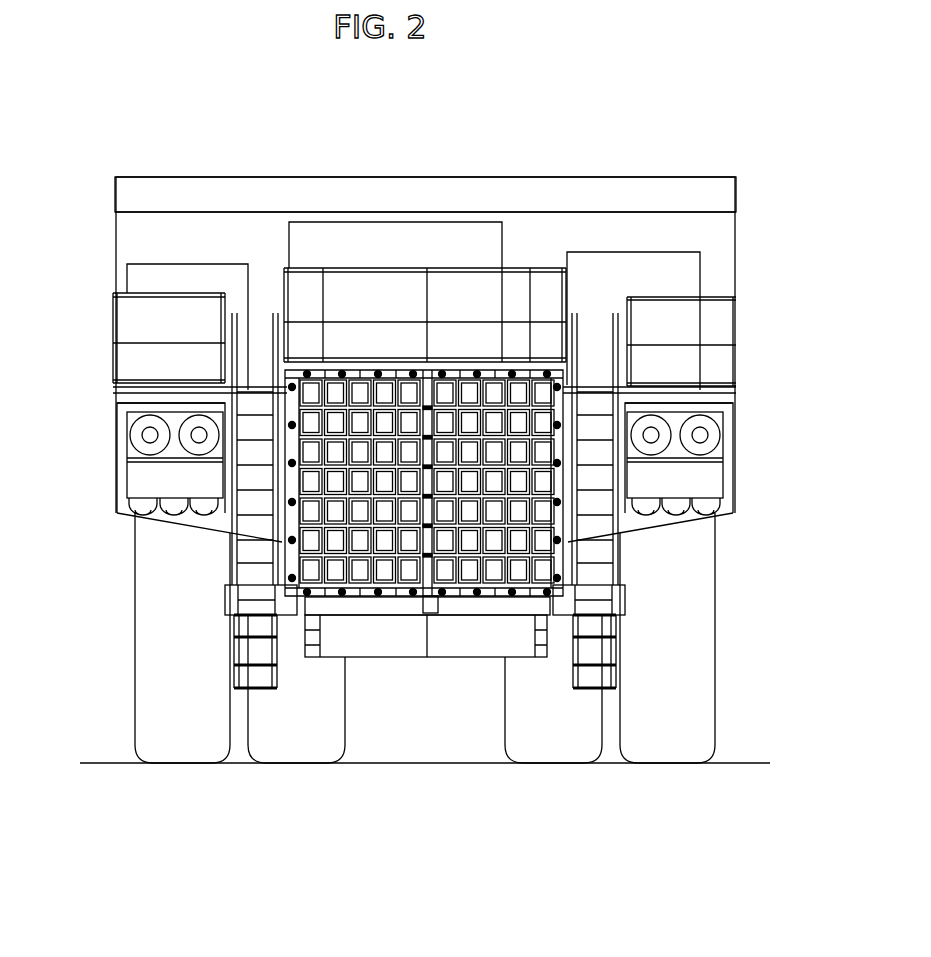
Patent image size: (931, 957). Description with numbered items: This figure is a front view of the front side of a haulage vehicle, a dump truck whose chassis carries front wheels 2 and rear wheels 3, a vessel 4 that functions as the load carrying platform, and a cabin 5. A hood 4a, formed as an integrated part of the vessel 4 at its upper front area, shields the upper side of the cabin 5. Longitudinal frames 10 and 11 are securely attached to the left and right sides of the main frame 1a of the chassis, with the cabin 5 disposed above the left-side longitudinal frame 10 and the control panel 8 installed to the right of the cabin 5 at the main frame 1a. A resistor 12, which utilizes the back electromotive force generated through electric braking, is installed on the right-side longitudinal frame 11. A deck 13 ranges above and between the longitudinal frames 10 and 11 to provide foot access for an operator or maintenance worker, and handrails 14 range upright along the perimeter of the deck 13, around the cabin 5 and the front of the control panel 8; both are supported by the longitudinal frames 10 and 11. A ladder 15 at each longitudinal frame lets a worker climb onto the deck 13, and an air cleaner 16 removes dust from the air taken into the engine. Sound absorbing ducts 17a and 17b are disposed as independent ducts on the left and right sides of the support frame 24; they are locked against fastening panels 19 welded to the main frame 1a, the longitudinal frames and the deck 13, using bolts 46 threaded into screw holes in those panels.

The main frame 1a is at (342, 612).
The front wheels 2 is at (187, 712).
The rear wheels 3 is at (333, 742).
The vessel 4 is at (662, 228).
The hood 4a is at (188, 187).
The cabin 5 is at (588, 268).
The control panel 8 is at (442, 242).
The longitudinal frame 10 is at (625, 562).
The longitudinal frame 11 is at (222, 570).
The resistor 12 is at (157, 263).
The deck 13 is at (465, 358).
The handrails 14 is at (113, 297).
The ladder 15 is at (232, 653).
The air cleaner 16 is at (140, 474).
The sound absorbing duct 17a is at (470, 575).
The sound absorbing duct 17b is at (378, 580).
The fastening panels 19 is at (285, 409).
The support frame 24 is at (425, 372).
The bolts 46 is at (378, 372).